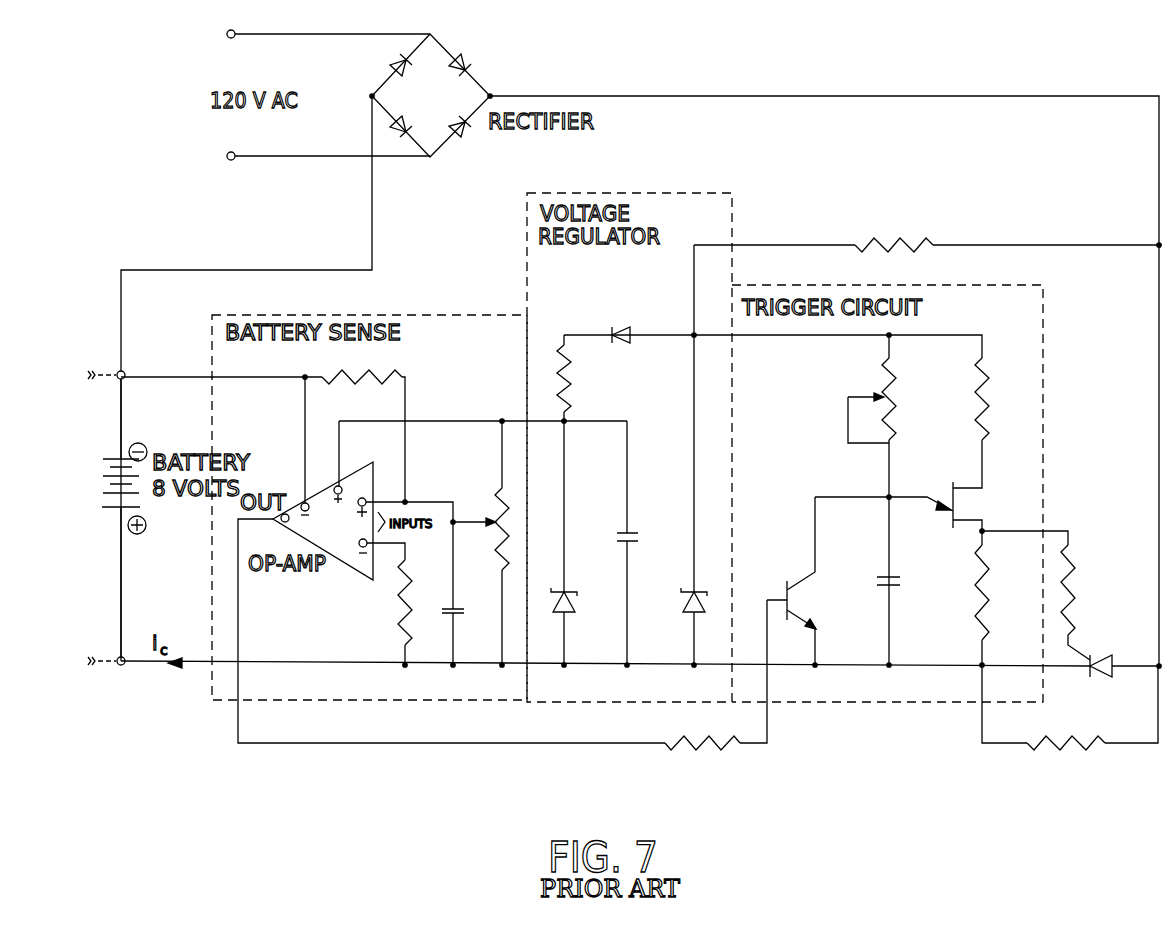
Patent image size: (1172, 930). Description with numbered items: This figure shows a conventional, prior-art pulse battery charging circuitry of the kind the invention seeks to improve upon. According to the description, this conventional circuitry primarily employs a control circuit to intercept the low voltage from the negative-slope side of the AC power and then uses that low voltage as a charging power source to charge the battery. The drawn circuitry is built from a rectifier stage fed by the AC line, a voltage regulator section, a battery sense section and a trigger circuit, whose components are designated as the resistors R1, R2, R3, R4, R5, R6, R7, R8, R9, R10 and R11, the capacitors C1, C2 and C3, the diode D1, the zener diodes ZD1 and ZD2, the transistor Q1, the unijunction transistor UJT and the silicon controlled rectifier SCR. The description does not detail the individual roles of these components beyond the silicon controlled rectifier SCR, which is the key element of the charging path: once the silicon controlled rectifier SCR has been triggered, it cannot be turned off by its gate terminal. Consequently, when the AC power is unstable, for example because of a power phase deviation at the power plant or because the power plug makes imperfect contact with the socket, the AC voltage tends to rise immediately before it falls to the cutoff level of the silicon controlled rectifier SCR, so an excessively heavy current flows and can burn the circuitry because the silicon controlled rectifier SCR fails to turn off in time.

The resistor R1 (22 ohm) R1 is at (1058, 595).
The resistor R2 (27 ohm) R2 is at (1008, 598).
The resistor R3 (390 ohm) R3 is at (1002, 423).
The potentiometer R4 (100 kohm) R4 is at (910, 501).
The resistor R5 (5 kohm) R5 is at (926, 247).
The resistor R6 (690 ohm) R6 is at (598, 379).
The potentiometer R7 (10 kohm) R7 is at (506, 543).
The resistor R8 (5.6 kohm) R8 is at (375, 613).
The resistor R9 (10 kohm) R9 is at (263, 426).
The resistor R10 (10 kohm) R10 is at (716, 692).
The resistor R11 (10 kohm) R11 is at (1070, 725).
The capacitor C1 (.22 uF) C1 is at (916, 586).
The capacitor C2 (100 uF) C2 is at (651, 544).
The capacitor C3 (.2 uF) C3 is at (467, 623).
The diode D1 (1N4002) D1 is at (629, 330).
The zener diode ZD1 (24 V) ZD1 is at (717, 456).
The zener diode ZD2 (12 V) ZD2 is at (587, 544).
The transistor Q1 is at (802, 582).
The unijunction transistor UJT is at (912, 506).
The silicon controlled rectifier SCR is at (1118, 681).